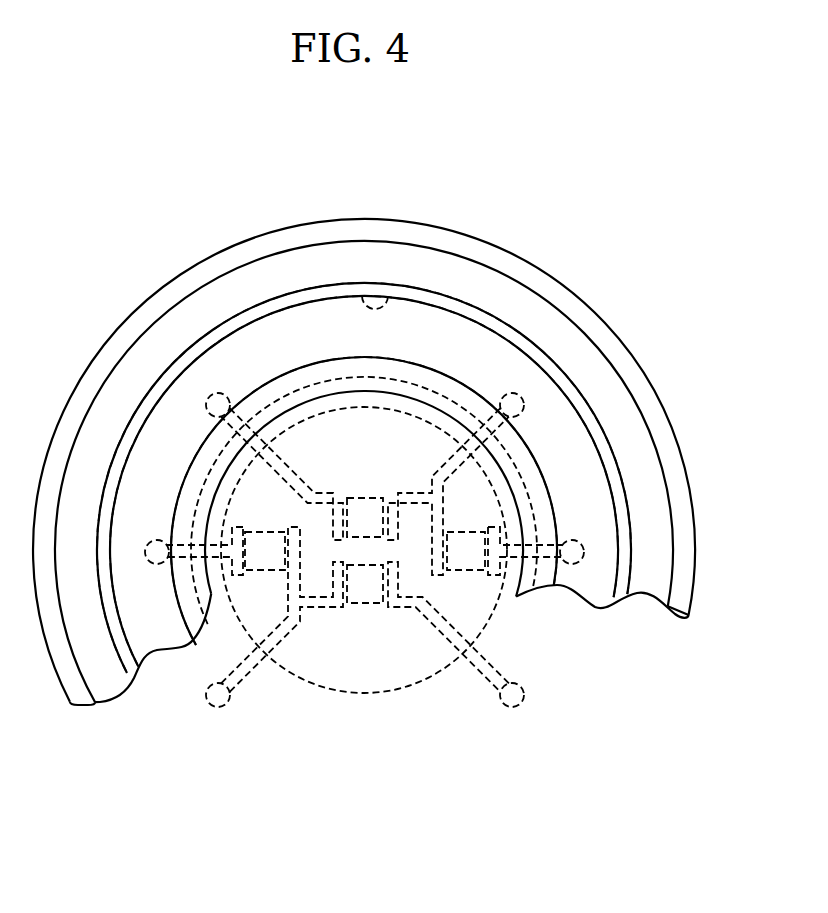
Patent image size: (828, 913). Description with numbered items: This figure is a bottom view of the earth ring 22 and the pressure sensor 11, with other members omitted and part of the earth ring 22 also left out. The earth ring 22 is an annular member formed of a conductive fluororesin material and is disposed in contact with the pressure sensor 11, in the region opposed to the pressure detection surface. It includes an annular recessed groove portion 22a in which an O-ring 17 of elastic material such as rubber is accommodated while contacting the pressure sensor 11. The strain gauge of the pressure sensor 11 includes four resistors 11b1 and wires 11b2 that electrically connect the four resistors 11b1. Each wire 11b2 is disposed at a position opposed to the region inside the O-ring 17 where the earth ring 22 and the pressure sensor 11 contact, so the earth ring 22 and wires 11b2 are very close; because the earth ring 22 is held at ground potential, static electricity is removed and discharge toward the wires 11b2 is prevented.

The pressure sensor 11 is at (436, 823).
The resistor 11b1 is at (363, 496).
The wire 11b2 is at (291, 458).
The O-ring 17 is at (606, 663).
The earth ring 22 is at (593, 309).
The recessed groove portion 22a is at (388, 292).